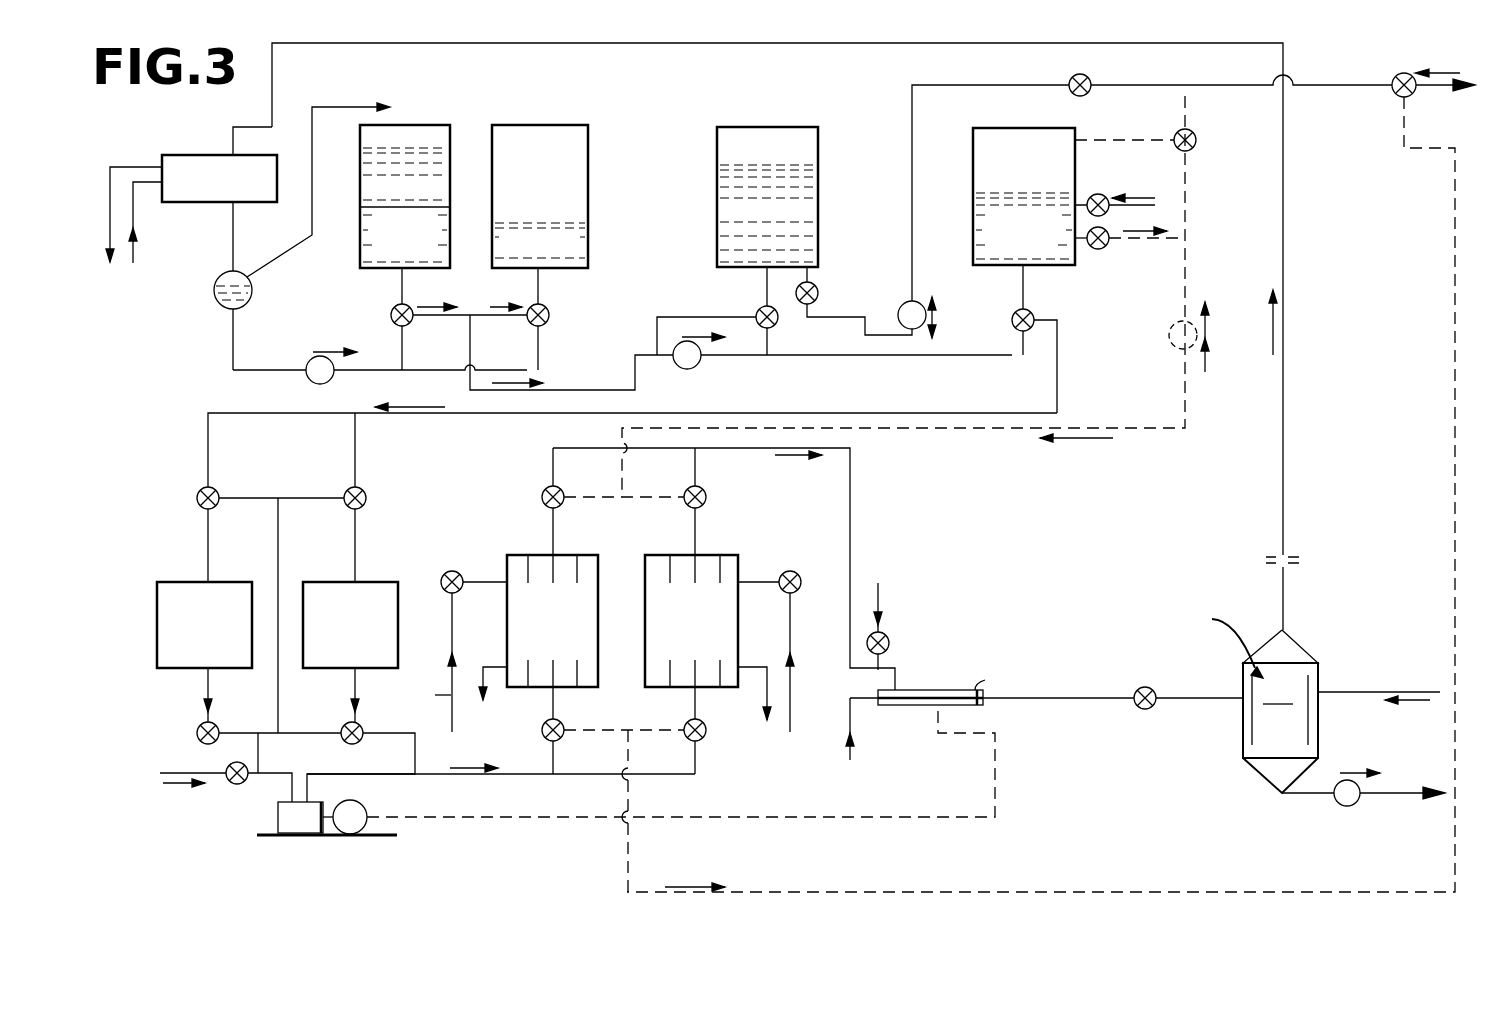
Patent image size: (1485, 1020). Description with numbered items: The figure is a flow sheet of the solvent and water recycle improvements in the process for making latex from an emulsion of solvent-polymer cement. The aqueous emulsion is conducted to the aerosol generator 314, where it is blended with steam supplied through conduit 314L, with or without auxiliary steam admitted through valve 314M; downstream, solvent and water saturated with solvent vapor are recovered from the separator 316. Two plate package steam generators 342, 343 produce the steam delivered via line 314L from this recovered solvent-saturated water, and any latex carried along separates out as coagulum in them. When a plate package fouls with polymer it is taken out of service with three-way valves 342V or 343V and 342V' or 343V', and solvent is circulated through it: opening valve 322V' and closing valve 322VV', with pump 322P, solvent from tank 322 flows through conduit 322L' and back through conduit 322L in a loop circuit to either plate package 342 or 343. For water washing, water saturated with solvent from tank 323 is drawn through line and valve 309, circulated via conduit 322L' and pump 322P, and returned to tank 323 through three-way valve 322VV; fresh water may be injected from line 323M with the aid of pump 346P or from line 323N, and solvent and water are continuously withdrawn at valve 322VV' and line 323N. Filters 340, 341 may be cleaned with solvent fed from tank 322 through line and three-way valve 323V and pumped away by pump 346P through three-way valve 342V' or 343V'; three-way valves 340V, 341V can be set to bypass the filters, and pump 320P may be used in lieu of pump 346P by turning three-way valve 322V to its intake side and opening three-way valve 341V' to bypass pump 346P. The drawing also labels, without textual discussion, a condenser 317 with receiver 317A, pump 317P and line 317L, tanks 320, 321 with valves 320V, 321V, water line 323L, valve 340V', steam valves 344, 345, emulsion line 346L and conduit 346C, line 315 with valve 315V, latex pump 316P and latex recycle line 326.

The condenser 317 is at (203, 160).
The condensate receiver 317A is at (250, 284).
The pump 317P is at (309, 364).
The vapor line 317L is at (625, 45).
The solvent/water separation tank 320 is at (382, 173).
The valve 320V is at (392, 308).
The pump 320P is at (700, 366).
The solvent tank 321 is at (572, 183).
The valve 321V is at (528, 308).
The tank 322 is at (740, 146).
The three-way valve 322V is at (717, 311).
The valve 322V' is at (854, 295).
The pump 322P is at (918, 302).
The conduit 322L is at (1194, 77).
The conduit 322L' is at (1038, 494).
The three-way valve 322VV is at (1163, 127).
The valve 322VV' is at (1387, 91).
The tank 323 is at (1003, 137).
The line 323N is at (1086, 195).
The line and valve 309 is at (1100, 252).
The three-way valve 323V is at (1032, 313).
The water line 323L is at (245, 413).
The line 323M is at (200, 782).
The filter 340 is at (187, 590).
The three-way valve 340V is at (242, 598).
The valve 340V' is at (224, 747).
The filter 341 is at (328, 590).
The three-way valve 341V is at (328, 522).
The three-way valve 341V' is at (363, 755).
The plate package steam generator 342 is at (520, 565).
The three-way valve 342V is at (584, 501).
The three-way valve 342V' is at (581, 730).
The plate package steam generator 343 is at (658, 565).
The three-way valve 343V is at (721, 501).
The three-way valve 343V' is at (664, 730).
The steam valve 344 is at (447, 577).
The steam valve 345 is at (788, 577).
The pump 346P is at (285, 818).
The emulsion line 346L is at (648, 815).
The conduit 346C is at (936, 705).
The aerosol generator 314 is at (975, 705).
The conduit 314L is at (852, 534).
The valve 314M is at (890, 641).
The line 315 is at (1030, 702).
The valve 315V is at (1134, 690).
The separator 316 is at (1206, 685).
The latex pump 316P is at (1335, 800).
The latex recycle line 326 is at (1342, 692).